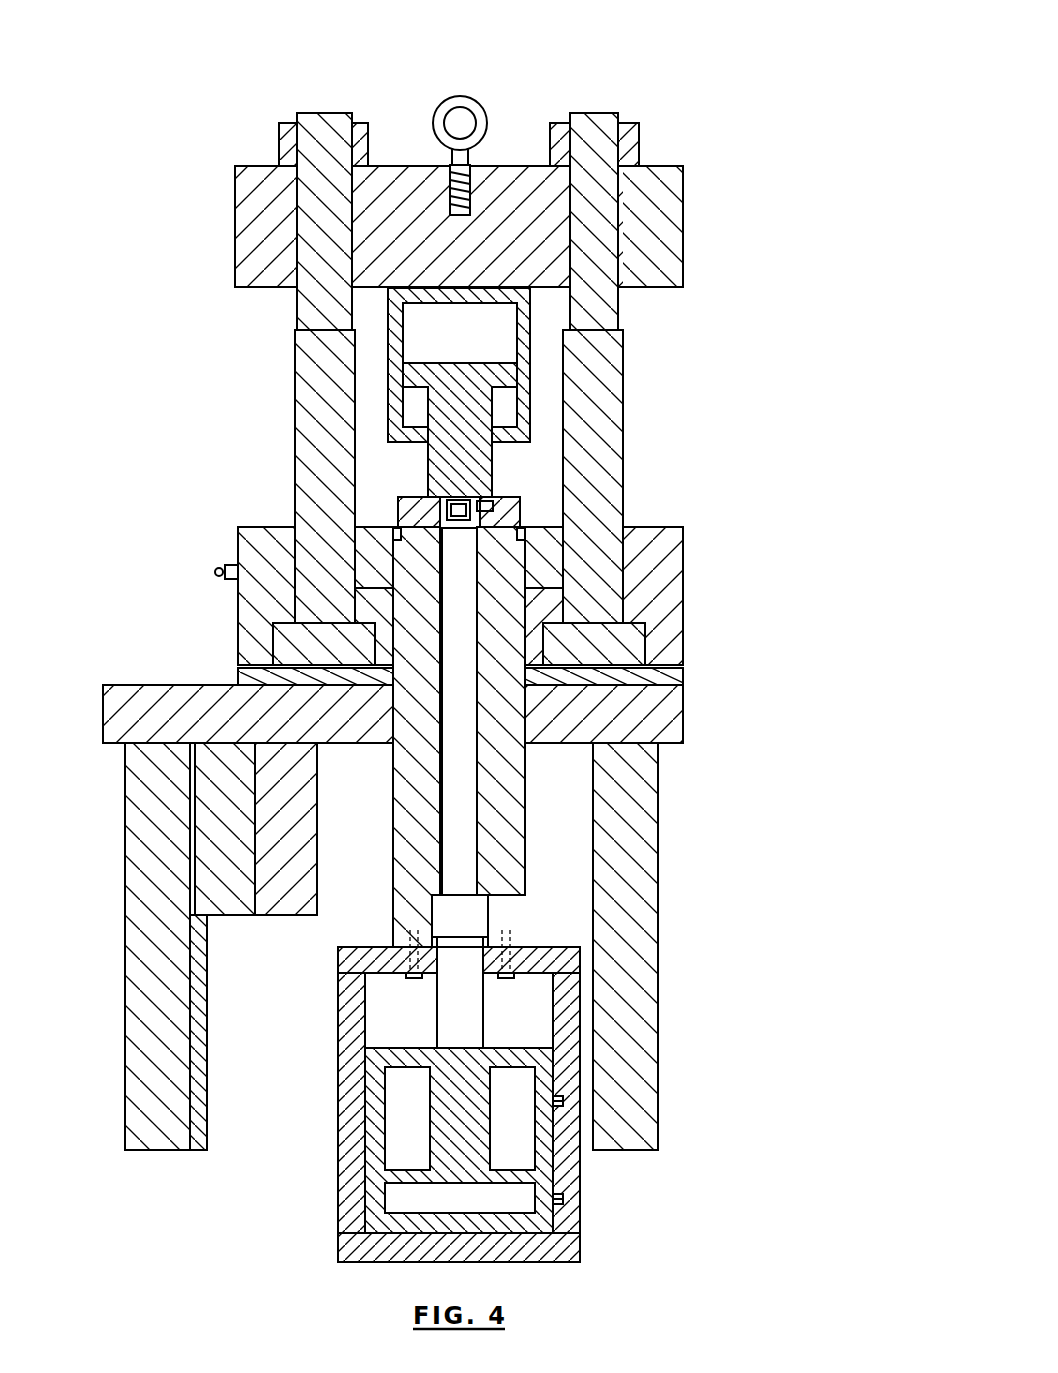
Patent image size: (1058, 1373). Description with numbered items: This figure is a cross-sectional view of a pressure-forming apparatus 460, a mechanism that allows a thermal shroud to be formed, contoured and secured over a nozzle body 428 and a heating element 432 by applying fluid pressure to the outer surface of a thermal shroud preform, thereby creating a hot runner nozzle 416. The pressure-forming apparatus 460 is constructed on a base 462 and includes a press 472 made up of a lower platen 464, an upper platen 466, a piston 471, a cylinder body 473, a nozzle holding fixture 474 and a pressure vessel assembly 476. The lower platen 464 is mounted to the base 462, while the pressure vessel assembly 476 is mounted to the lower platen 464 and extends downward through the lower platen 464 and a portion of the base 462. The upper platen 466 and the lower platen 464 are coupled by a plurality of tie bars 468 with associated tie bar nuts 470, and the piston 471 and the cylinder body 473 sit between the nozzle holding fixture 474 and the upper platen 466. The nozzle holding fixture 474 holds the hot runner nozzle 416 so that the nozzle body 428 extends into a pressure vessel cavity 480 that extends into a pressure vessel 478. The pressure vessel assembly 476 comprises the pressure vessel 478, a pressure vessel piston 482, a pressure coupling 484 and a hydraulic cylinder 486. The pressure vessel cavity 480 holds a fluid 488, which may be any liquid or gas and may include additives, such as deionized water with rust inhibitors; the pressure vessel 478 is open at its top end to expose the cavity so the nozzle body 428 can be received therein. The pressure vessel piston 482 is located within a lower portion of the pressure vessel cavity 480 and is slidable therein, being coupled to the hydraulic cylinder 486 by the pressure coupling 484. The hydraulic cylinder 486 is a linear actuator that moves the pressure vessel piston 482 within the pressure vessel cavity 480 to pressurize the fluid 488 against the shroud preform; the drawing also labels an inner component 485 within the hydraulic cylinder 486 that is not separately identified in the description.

The pressure-forming apparatus 460 is at (754, 115).
The base 462 is at (714, 739).
The lower platen 464 is at (672, 635).
The upper platen 466 is at (672, 235).
The tie bars 468 is at (320, 207).
The tie bar nuts 470 is at (370, 133).
The piston 471 is at (468, 401).
The press 472 is at (222, 169).
The cylinder body 473 is at (526, 350).
The nozzle holding fixture 474 is at (522, 504).
The pressure vessel assembly 476 is at (545, 830).
The pressure vessel 478 is at (413, 800).
The pressure vessel cavity 480 is at (452, 860).
The pressure vessel piston 482 is at (440, 945).
The pressure coupling 484 is at (447, 998).
The actuator core 485 is at (410, 1180).
The hydraulic cylinder 486 is at (375, 1114).
The fluid 488 is at (452, 819).
The hot runner nozzle 416 is at (415, 502).
The nozzle body 428 is at (472, 512).
The heating element 432 is at (466, 535).